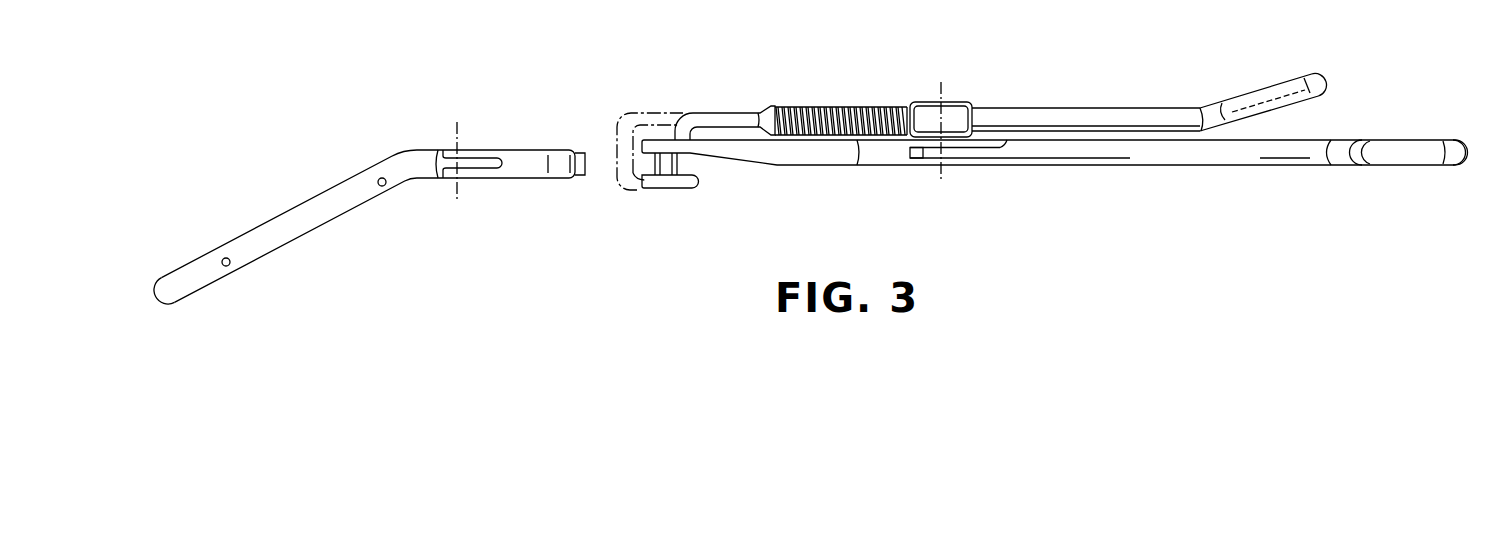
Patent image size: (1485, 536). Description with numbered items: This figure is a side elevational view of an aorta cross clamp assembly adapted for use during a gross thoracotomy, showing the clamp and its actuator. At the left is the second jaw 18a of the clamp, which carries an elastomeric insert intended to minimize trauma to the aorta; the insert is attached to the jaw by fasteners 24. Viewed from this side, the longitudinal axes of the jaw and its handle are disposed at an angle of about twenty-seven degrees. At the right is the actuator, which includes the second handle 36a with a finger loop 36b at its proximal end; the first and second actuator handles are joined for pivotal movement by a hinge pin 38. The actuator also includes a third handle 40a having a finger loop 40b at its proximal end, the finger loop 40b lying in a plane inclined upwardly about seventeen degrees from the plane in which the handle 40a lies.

The second jaw 18a is at (285, 220).
The fasteners 24 is at (385, 187).
The second handle 36a is at (1190, 158).
The finger loop 36b is at (1417, 163).
The hinge pin 38 is at (932, 175).
The third handle 40a is at (1090, 107).
The finger loop 40b is at (1263, 87).